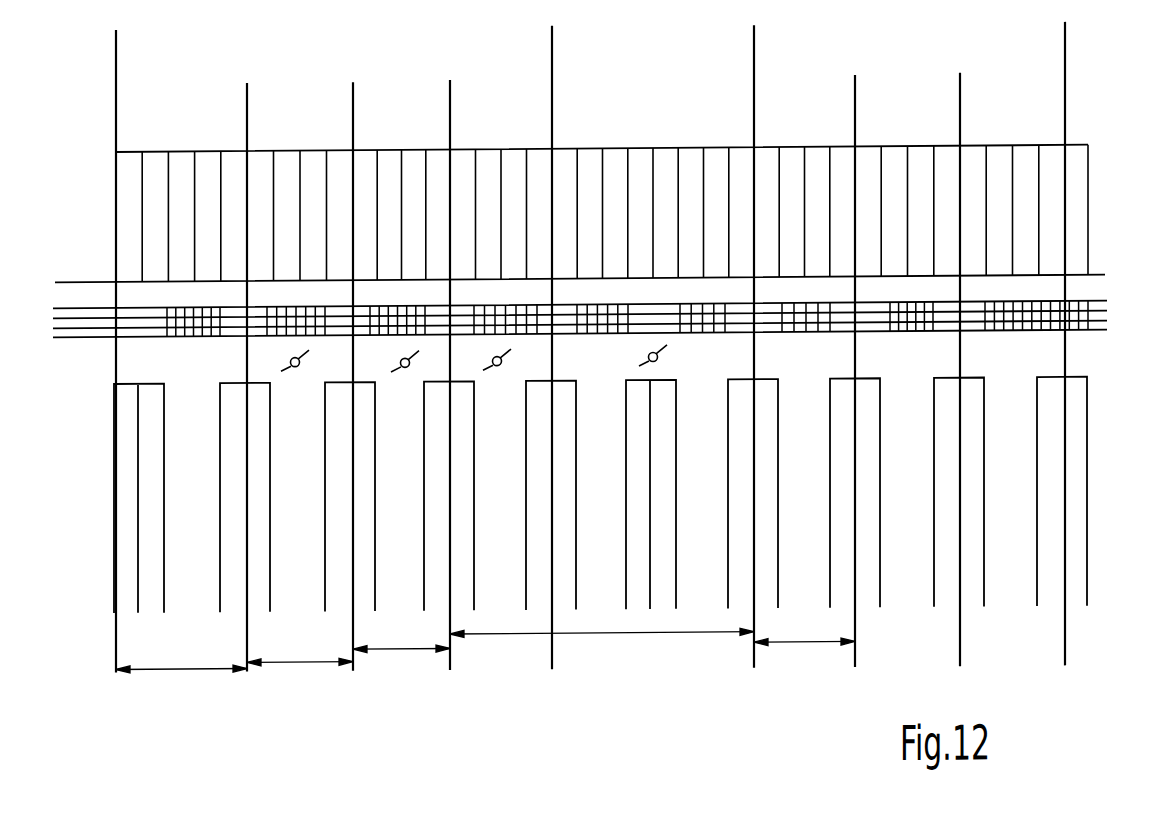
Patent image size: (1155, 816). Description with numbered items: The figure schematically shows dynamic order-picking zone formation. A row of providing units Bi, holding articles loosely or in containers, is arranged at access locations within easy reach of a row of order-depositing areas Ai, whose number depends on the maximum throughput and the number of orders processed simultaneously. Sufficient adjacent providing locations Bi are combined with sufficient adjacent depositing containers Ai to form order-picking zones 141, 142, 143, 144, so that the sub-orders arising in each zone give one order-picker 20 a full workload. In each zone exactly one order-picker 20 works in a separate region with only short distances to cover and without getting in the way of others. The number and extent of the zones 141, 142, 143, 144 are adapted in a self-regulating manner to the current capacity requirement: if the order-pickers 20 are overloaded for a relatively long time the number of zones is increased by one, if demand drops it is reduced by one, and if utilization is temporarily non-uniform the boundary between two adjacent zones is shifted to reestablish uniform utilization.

The order-picker 20 is at (294, 359).
The order-picking zone 141 is at (180, 671).
The order-picking zone 142 is at (303, 664).
The order-picking zone 143 is at (405, 651).
The order-picking zone 144 is at (620, 637).
The order-depositing area Ai is at (625, 312).
The providing unit Bi is at (600, 429).